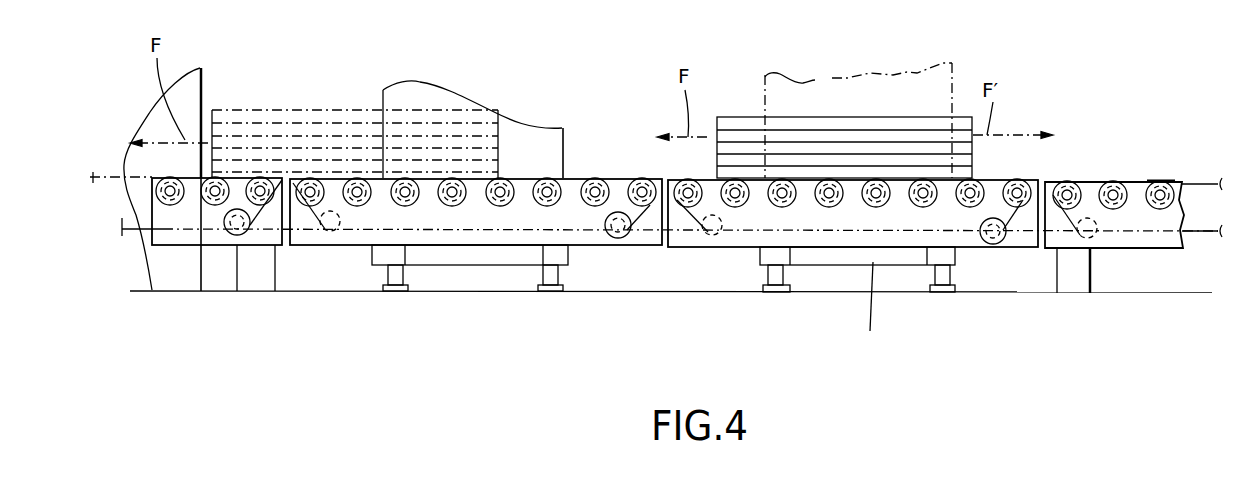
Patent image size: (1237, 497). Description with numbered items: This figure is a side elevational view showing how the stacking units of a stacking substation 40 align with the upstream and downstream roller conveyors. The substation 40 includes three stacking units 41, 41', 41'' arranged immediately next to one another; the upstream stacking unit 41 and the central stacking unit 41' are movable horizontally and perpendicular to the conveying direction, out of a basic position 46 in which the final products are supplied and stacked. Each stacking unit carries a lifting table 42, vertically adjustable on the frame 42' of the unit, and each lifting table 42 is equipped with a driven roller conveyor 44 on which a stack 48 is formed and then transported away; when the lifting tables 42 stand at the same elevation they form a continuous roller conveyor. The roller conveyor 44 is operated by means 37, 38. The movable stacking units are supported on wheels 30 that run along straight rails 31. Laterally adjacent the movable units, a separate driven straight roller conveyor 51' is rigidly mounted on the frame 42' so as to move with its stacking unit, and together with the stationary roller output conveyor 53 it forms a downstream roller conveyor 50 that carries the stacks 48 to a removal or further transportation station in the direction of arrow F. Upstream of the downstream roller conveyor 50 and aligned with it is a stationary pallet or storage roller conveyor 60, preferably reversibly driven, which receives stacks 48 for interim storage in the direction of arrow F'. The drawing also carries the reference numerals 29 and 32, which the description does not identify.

The conveyor rollers 29 is at (175, 200).
The wheels 30 is at (405, 266).
The straight rails 31 is at (390, 292).
The workpiece 32 is at (413, 92).
The roller conveyor drive means 37 is at (242, 228).
The roller conveyor drive means 38 is at (163, 232).
The stacking substation 40 is at (1020, 88).
The upstream stacking unit 41 is at (853, 271).
The central stacking unit 41' is at (582, 119).
The stacking unit 41'' is at (226, 153).
The lifting table 42 is at (692, 282).
The frame 42' is at (704, 209).
The driven roller conveyor 44 is at (1036, 170).
The basic position 46 is at (475, 87).
The stack 48 is at (349, 100).
The downstream roller conveyor 50 is at (122, 204).
The driven straight roller conveyor 51' is at (604, 151).
The stationary roller output conveyor 53 is at (146, 160).
The stationary pallet and/or storage roller conveyor 60 is at (1170, 171).